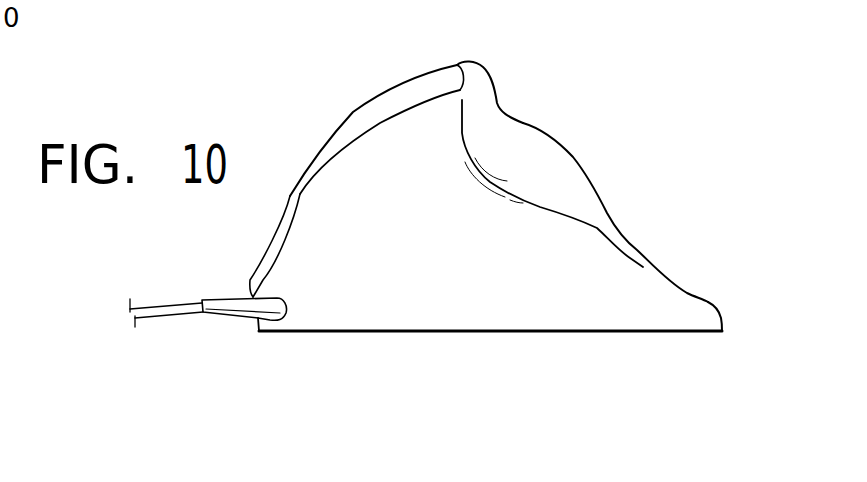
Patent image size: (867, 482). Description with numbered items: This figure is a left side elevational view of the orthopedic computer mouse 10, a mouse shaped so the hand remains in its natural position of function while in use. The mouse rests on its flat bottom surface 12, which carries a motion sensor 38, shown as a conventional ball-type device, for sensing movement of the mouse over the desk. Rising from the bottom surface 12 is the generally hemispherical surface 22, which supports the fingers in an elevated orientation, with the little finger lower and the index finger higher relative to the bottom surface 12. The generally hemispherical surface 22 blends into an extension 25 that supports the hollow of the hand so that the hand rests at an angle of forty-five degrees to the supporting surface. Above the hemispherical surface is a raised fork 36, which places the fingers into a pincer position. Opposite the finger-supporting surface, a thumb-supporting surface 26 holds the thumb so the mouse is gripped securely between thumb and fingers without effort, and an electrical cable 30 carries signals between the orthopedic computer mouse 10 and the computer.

The orthopedic computer mouse 10 is at (498, 74).
The bottom surface 12 is at (490, 360).
The generally hemispherical surface 22 is at (573, 175).
The extension 25 is at (698, 303).
The thumb-supporting surface 26 is at (307, 243).
The electrical cable 30 is at (158, 318).
The raised fork 36 is at (350, 130).
The motion sensor 38 is at (458, 332).